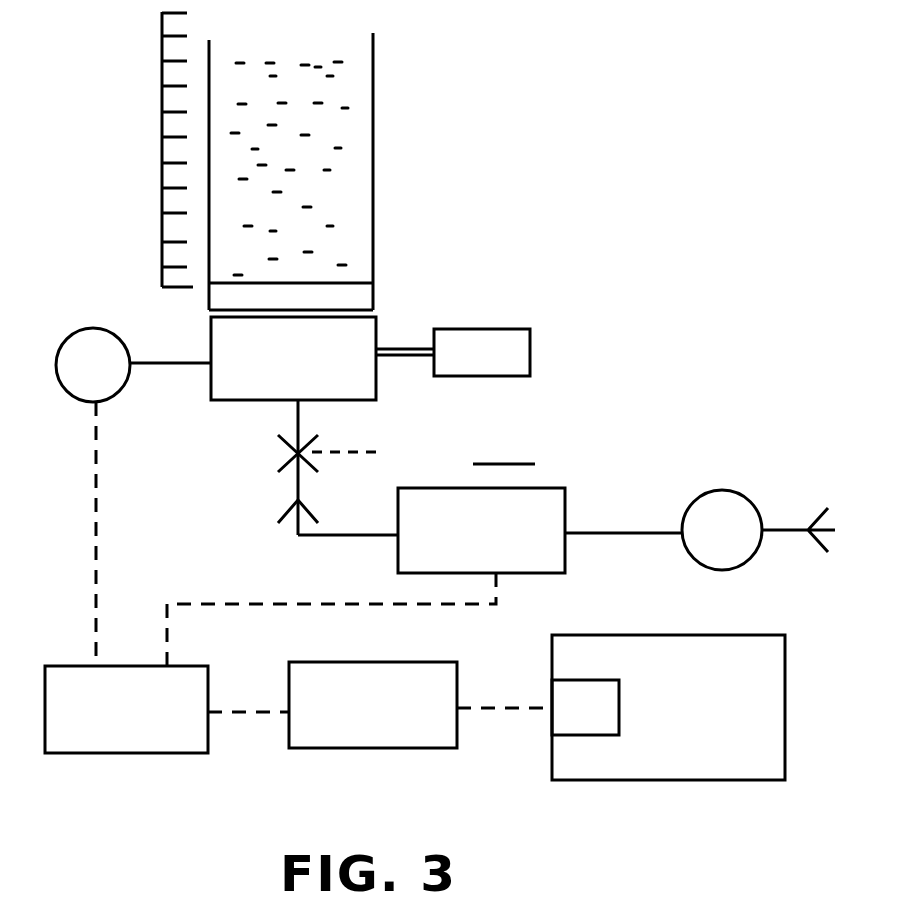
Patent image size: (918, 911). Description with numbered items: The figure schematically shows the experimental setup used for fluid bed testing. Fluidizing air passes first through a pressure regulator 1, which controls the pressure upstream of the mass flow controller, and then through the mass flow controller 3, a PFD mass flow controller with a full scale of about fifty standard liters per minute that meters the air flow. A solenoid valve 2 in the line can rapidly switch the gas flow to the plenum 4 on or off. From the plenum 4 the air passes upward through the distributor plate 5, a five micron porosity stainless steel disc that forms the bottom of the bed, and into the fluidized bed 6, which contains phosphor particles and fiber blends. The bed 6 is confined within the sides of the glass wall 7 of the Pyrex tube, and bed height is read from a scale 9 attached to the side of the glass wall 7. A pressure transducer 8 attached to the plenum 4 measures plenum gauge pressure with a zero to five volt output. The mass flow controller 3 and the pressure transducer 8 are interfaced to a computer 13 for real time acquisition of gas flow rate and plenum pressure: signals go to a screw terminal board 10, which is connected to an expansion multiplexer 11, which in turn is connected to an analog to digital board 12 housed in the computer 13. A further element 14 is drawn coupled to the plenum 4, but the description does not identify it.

The pressure regulator 1 is at (748, 500).
The solenoid valve 2 is at (290, 458).
The mass flow controller 3 is at (540, 488).
The plenum 4 is at (211, 400).
The distributor plate 5 is at (375, 296).
The fluidized bed 6 is at (345, 191).
The glass wall 7 is at (373, 78).
The pressure transducer 8 is at (68, 340).
The scale 9 is at (162, 135).
The screw terminal board 10 is at (120, 754).
The expansion multiplexer 11 is at (362, 750).
The analog to digital board 12 is at (590, 722).
The computer 13 is at (787, 708).
The drive motor 14 is at (530, 329).